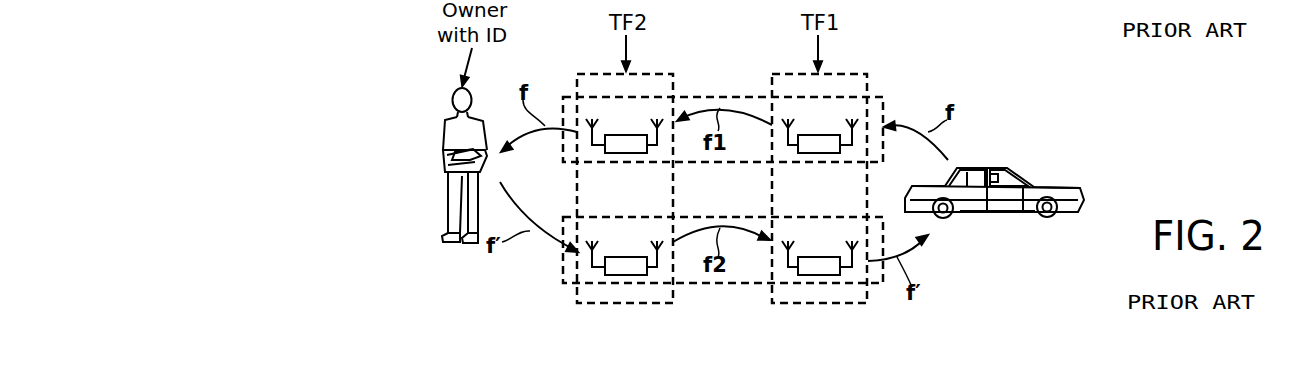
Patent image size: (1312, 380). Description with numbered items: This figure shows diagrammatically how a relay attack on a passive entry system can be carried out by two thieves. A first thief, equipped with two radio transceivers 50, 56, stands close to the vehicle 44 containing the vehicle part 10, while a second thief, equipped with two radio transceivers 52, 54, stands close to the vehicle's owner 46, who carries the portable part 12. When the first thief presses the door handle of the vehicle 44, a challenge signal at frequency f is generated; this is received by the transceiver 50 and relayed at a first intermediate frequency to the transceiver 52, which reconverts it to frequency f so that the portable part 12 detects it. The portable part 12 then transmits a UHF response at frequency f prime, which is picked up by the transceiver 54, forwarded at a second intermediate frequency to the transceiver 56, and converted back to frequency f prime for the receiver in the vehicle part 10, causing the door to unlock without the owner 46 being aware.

The vehicle part 10 is at (995, 172).
The portable part 12 is at (443, 158).
The vehicle 44 is at (995, 222).
The vehicle's owner 46 is at (448, 125).
The radio transceiver 50 is at (820, 136).
The radio transceiver 52 is at (627, 136).
The radio transceiver 54 is at (627, 258).
The radio transceiver 56 is at (820, 258).